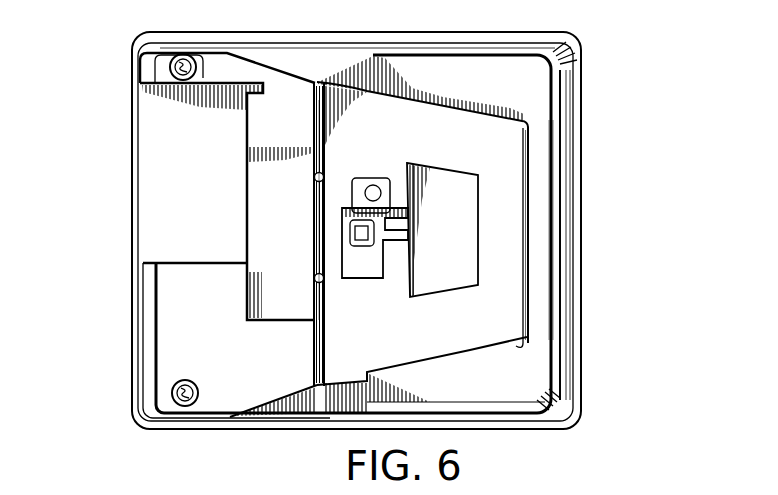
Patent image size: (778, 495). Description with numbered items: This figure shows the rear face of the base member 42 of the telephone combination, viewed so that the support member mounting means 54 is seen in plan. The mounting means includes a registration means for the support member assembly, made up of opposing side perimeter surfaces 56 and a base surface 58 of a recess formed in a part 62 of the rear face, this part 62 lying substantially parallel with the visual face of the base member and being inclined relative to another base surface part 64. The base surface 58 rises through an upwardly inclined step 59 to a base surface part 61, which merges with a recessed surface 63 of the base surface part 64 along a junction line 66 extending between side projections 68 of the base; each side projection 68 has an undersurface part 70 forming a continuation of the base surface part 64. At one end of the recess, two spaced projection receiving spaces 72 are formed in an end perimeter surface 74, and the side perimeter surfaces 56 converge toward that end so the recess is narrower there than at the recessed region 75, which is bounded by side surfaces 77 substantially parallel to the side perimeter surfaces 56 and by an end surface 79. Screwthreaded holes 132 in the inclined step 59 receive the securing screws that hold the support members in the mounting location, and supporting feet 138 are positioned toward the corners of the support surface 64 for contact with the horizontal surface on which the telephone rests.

The base member 42 is at (583, 128).
The support member mounting means 54 is at (496, 268).
The side perimeter surfaces 56 is at (511, 100).
The base surface 58 is at (500, 223).
The upwardly inclined step 59 is at (313, 198).
The base surface part 61 is at (270, 178).
The part of the rear face 62 is at (531, 67).
The recessed surface 63 is at (245, 156).
The base surface part 64 is at (210, 60).
The junction line 66 is at (178, 127).
The side projections 68 is at (316, 58).
The undersurface part 70 is at (277, 104).
The projection receiving spaces 72 is at (515, 170).
The end perimeter surface 74 is at (530, 238).
The recessed region 75 is at (454, 238).
The side surfaces 77 is at (412, 166).
The end surface 79 is at (408, 270).
The aligned holes 132 is at (373, 54).
The supporting feet 138 is at (155, 62).